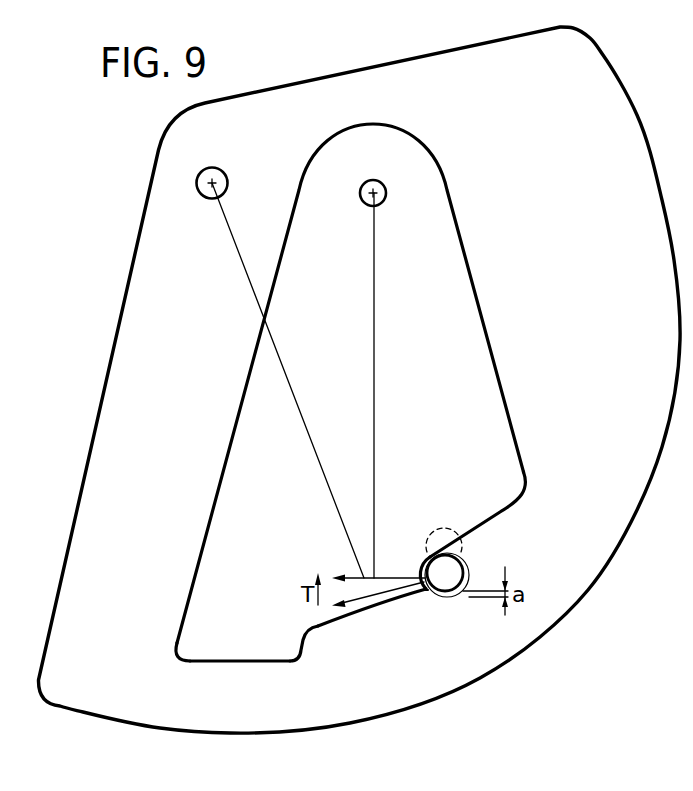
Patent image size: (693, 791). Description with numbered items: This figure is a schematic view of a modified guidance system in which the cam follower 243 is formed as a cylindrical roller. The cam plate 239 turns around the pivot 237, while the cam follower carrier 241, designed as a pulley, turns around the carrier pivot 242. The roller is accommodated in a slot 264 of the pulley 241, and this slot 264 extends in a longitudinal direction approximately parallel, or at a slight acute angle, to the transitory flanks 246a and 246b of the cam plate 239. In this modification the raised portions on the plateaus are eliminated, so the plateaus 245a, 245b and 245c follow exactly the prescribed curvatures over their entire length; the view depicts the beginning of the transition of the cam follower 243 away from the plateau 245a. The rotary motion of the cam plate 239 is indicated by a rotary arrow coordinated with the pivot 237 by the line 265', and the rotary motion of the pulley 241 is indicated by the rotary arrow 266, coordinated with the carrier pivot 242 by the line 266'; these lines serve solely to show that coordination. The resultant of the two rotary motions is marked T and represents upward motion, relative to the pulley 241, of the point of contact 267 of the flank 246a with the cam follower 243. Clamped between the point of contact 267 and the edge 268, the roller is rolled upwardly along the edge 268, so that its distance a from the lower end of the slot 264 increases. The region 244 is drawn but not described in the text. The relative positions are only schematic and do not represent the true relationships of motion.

The pivot 237 is at (387, 190).
The cam plate 239 is at (370, 426).
The cam follower carrier 241 is at (130, 350).
The carrier pivot 242 is at (197, 191).
The cam follower 243 is at (466, 576).
The slot bottom corner 244 is at (207, 662).
The plateau 245a is at (516, 504).
The plateau 245b is at (364, 610).
The plateau 245c is at (240, 663).
The transitory flank 246a is at (426, 568).
The transitory flank 246b is at (302, 645).
The slot 264 is at (463, 546).
The line 265' is at (416, 385).
The line 266' is at (288, 380).
The rotary arrow 266 is at (378, 622).
The point of contact 267 is at (424, 588).
The edge 268 is at (463, 557).